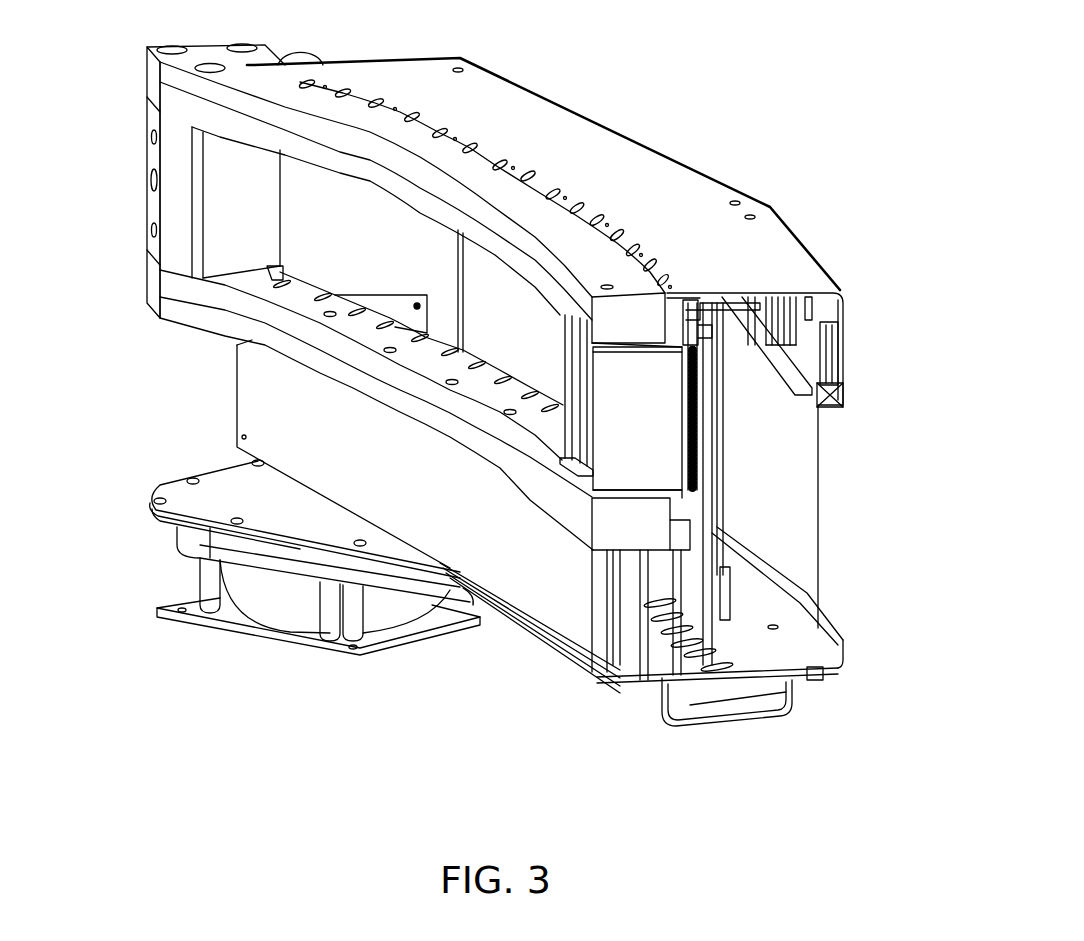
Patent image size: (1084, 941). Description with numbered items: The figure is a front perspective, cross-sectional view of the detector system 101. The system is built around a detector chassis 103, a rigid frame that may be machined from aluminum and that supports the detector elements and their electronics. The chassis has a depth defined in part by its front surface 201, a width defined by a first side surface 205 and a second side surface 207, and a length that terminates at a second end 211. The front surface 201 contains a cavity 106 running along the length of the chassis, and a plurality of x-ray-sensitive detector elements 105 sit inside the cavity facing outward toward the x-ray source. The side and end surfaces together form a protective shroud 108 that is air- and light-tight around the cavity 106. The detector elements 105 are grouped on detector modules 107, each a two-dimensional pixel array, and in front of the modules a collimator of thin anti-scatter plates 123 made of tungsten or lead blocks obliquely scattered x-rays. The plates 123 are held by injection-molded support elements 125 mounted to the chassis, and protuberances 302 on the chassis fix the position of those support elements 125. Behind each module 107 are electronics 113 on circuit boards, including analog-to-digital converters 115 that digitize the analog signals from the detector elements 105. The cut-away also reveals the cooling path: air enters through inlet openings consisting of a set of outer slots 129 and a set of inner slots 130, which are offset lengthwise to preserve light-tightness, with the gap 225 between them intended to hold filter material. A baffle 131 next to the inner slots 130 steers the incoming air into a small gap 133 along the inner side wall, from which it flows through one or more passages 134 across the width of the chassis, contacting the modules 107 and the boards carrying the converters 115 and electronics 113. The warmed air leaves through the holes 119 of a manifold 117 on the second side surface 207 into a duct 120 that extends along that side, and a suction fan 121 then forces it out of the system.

The detector system 101 is at (705, 98).
The detector chassis 103 is at (323, 115).
The detector elements 105 is at (688, 357).
The cavity 106 is at (525, 332).
The detector modules 107 is at (707, 417).
The protective shroud 108 is at (671, 211).
The electronics 113 is at (737, 500).
The analog-to-digital converters 115 is at (720, 530).
The manifold 117 is at (658, 680).
The holes 119 is at (728, 665).
The duct 120 is at (727, 711).
The suction fan 121 is at (285, 609).
The anti-scatter plates 123 is at (648, 456).
The support elements 125 is at (620, 497).
The outer slots 129 is at (840, 343).
The inner slots 130 is at (793, 307).
The baffle 131 is at (767, 317).
The gap 133 is at (730, 297).
The passage 134 is at (700, 393).
The front surface 201 is at (298, 235).
The first side surface 205 is at (545, 122).
The second side surface 207 is at (855, 450).
The second end 211 is at (150, 118).
The gap between outer and inner slots 225 is at (830, 390).
The protuberances 302 is at (565, 461).